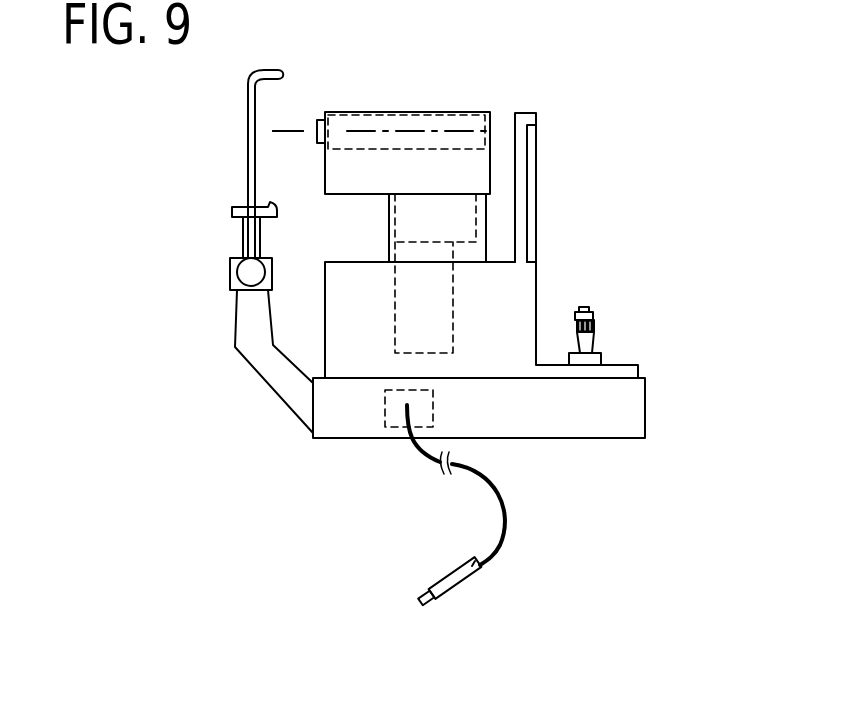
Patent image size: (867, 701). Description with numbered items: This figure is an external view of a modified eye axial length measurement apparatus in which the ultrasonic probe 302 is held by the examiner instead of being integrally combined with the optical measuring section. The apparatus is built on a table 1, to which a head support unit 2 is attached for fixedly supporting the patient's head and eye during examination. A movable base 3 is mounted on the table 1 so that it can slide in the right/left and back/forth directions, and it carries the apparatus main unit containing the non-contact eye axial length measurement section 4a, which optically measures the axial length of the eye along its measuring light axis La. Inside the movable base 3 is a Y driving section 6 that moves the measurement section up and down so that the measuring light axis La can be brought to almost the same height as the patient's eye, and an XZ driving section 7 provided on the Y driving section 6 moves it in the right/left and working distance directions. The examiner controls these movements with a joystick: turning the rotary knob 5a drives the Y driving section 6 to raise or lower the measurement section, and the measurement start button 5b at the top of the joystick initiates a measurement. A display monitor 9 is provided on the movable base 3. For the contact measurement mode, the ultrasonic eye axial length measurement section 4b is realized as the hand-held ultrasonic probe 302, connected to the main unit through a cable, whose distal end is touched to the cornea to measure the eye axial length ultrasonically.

The table 1 is at (602, 408).
The head support unit 2 is at (213, 278).
The movable base 3 is at (485, 348).
The non-contact eye axial length measurement section 4a is at (485, 143).
The ultrasonic eye axial length measurement section 4b is at (422, 530).
The rotary knob 5a is at (592, 328).
The measurement start button 5b is at (590, 312).
The Y driving section 6 is at (410, 310).
The XZ driving section 7 is at (420, 222).
The display monitor 9 is at (532, 193).
The measuring light axis La is at (435, 130).
The ultrasonic probe 302 is at (417, 590).